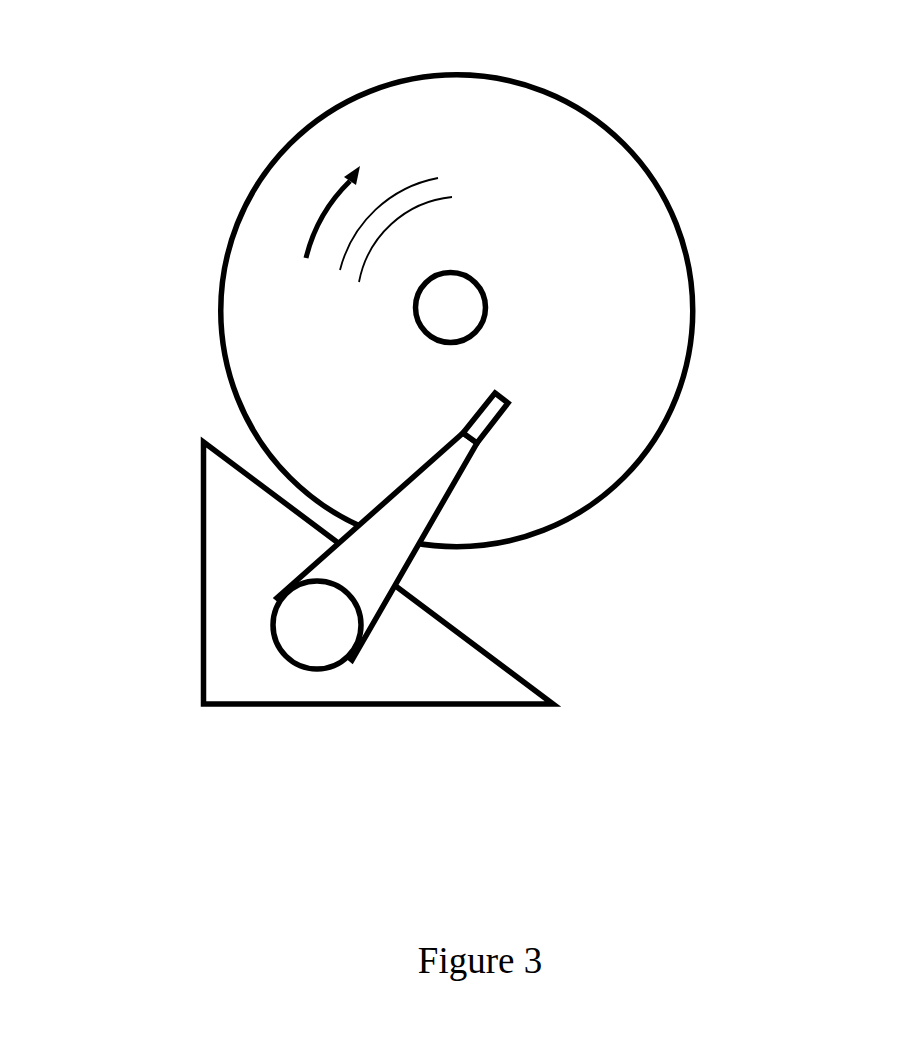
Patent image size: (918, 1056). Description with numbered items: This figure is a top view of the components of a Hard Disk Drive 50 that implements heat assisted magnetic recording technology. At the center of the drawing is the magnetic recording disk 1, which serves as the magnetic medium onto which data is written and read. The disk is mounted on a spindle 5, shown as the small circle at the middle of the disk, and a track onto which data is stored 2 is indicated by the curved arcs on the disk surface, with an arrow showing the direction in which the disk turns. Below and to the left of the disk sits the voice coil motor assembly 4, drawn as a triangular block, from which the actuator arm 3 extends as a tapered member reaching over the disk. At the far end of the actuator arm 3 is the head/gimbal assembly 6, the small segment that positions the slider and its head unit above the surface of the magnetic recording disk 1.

The Hard Disk Drive 50 is at (158, 34).
The magnetic recording disk 1 is at (682, 390).
The track onto which data is stored 2 is at (440, 177).
The actuator arm 3 is at (377, 546).
The voice coil motor assembly 4 is at (379, 573).
The spindle 5 is at (417, 328).
The head/gimbal assembly 6 is at (510, 400).